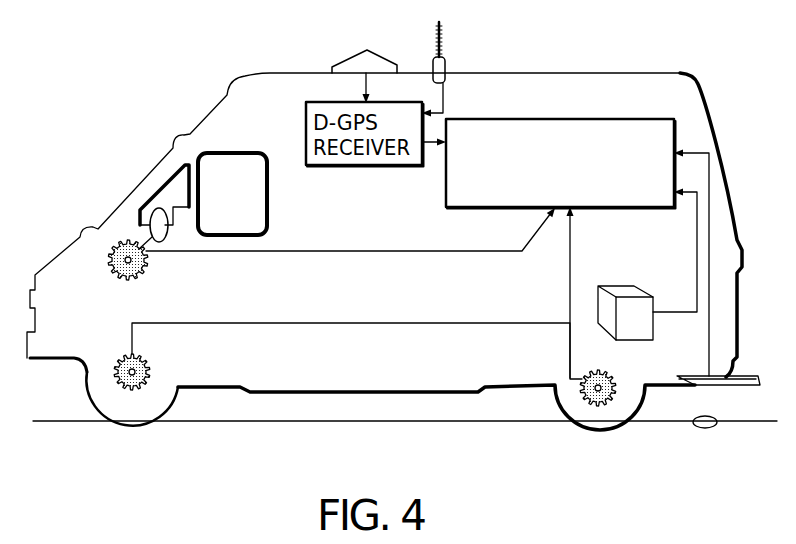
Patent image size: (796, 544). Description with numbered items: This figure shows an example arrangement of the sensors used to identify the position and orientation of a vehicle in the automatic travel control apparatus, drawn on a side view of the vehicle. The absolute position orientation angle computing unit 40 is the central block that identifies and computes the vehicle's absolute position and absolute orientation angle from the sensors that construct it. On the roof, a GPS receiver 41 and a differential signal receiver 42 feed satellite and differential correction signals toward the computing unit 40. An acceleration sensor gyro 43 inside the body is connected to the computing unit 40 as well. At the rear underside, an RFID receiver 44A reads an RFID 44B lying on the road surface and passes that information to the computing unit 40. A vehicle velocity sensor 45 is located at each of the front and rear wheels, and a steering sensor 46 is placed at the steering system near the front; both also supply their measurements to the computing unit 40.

The absolute position orientation angle computing unit 40 is at (620, 119).
The GPS receiver 41 is at (347, 58).
The differential signal receiver 42 is at (444, 52).
The acceleration sensor gyro 43 is at (633, 286).
The RFID receiver 44A is at (758, 380).
The RFID 44B is at (694, 419).
The vehicle velocity sensor 45 is at (130, 391).
The steering sensor 46 is at (141, 272).